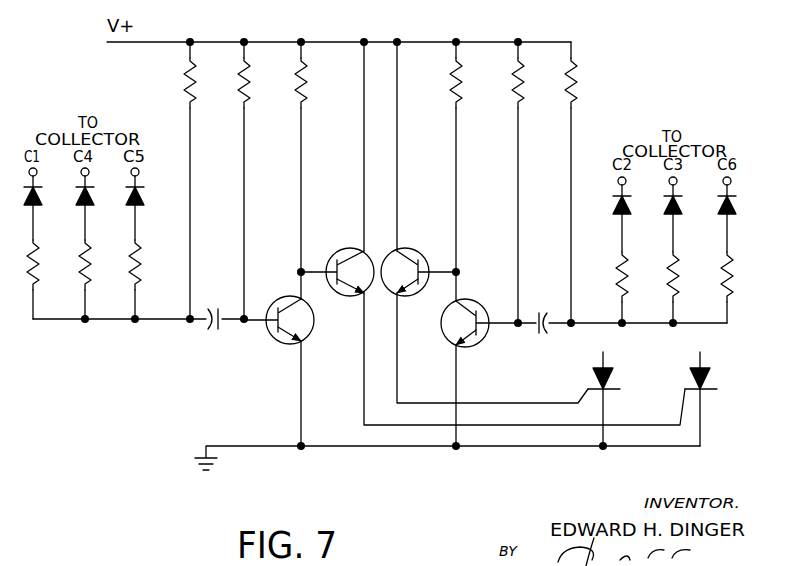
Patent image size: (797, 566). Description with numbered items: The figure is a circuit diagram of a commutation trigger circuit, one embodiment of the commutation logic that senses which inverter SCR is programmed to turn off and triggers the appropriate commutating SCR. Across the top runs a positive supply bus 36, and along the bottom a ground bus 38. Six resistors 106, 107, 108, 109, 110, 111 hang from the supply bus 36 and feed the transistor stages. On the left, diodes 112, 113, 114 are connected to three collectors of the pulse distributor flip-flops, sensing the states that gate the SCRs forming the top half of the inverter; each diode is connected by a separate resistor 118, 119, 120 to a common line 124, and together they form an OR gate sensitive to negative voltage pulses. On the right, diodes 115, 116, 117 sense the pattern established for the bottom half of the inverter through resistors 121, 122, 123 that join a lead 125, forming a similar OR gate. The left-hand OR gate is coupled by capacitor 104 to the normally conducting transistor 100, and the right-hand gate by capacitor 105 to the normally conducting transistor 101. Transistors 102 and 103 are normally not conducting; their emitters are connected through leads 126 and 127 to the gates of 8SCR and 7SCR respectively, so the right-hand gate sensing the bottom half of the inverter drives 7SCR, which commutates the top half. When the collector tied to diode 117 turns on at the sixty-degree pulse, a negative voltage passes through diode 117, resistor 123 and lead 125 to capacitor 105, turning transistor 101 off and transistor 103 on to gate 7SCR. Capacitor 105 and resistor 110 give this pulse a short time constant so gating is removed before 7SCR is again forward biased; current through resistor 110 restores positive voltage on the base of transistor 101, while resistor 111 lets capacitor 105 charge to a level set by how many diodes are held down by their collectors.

The positive supply bus 36 is at (252, 42).
The ground bus 38 is at (251, 446).
The normally conducting transistor 100 is at (312, 333).
The normally conducting transistor 101 is at (449, 338).
The transistor 102 is at (344, 251).
The transistor 103 is at (427, 241).
The capacitor 104 is at (211, 309).
The capacitor 105 is at (541, 313).
The resistor 106 is at (195, 90).
The resistor 107 is at (249, 90).
The resistor 108 is at (306, 90).
The resistor 109 is at (452, 90).
The resistor 110 is at (514, 90).
The resistor 111 is at (567, 90).
The diode 112 is at (36, 207).
The diode 113 is at (88, 207).
The diode 114 is at (138, 207).
The diode 115 is at (616, 214).
The diode 116 is at (669, 214).
The diode 117 is at (723, 214).
The resistor 118 is at (38, 272).
The resistor 119 is at (90, 272).
The resistor 120 is at (140, 272).
The resistor 121 is at (619, 286).
The resistor 122 is at (670, 286).
The resistor 123 is at (724, 286).
The common line 124 is at (110, 320).
The lead 125 is at (656, 324).
The gate lead 126 is at (364, 400).
The gate lead 127 is at (515, 403).
The commutating SCR 7SCR is at (580, 399).
The commutating SCR 8SCR is at (677, 399).